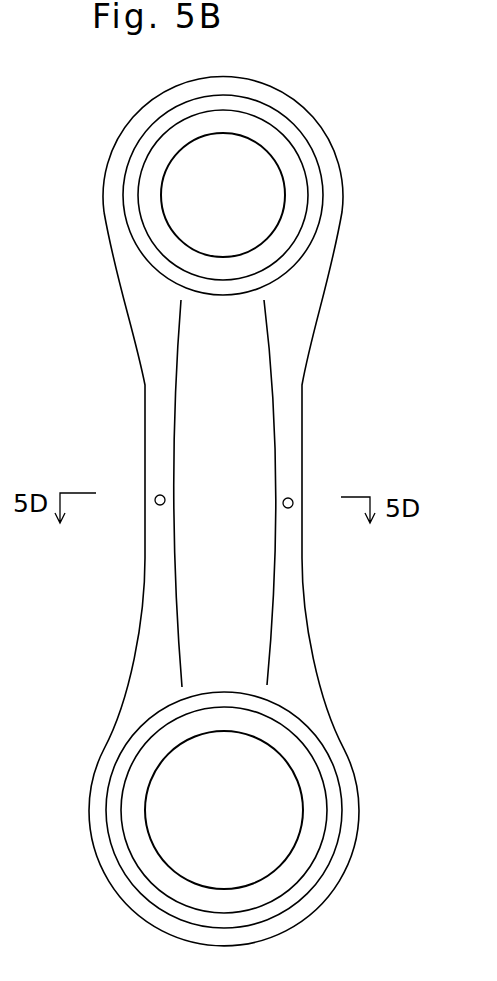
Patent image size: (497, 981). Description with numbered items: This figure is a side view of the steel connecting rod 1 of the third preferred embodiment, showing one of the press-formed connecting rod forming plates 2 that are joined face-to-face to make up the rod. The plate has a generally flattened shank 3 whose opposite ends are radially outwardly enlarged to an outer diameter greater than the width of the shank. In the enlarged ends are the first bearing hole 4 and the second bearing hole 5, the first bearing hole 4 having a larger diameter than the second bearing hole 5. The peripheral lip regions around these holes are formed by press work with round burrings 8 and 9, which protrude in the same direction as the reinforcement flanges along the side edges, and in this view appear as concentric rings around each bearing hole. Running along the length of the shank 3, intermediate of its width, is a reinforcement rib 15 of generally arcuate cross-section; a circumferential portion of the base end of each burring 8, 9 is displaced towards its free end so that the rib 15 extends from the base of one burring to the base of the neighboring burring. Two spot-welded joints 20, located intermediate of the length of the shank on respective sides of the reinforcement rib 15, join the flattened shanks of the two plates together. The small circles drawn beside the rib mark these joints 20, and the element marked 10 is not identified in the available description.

The steel connecting rod 1 is at (209, 511).
The first connecting rod forming plate 2 is at (322, 372).
The flattened shank 3 is at (290, 586).
The first bearing hole 4 is at (304, 224).
The second bearing hole 5 is at (302, 734).
The round burring 8 is at (313, 184).
The round burring 9 is at (333, 834).
The bushing 10 is at (276, 146).
The reinforcement rib 15 is at (248, 446).
The spot-welded joint 20 is at (157, 504).